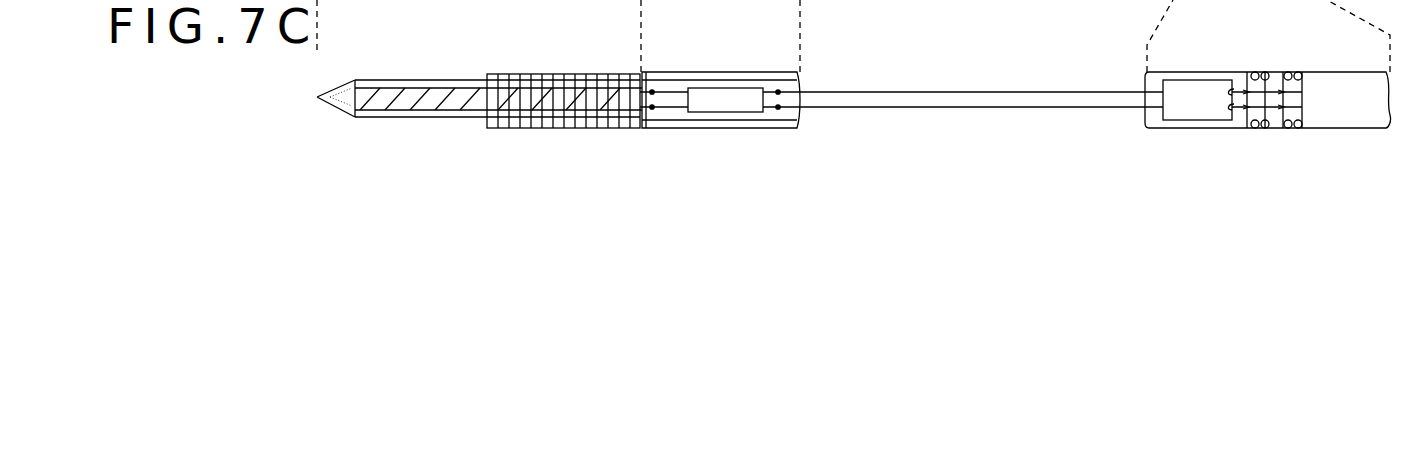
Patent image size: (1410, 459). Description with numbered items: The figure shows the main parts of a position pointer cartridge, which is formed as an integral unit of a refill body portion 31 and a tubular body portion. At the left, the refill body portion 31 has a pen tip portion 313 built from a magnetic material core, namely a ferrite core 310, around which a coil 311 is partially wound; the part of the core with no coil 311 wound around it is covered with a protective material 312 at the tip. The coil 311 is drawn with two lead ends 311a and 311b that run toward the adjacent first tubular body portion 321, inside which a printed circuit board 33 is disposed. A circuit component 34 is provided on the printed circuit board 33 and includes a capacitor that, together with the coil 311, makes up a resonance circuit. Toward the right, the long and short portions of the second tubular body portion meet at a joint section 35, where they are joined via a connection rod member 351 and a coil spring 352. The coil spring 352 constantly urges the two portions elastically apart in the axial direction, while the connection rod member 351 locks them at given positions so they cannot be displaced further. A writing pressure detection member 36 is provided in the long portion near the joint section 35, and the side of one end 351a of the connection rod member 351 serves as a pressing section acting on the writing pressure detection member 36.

The refill body portion 31 is at (511, 163).
The ferrite core 310 is at (498, 130).
The coil 311 is at (599, 131).
The first lead of mesh electrode 311a is at (645, 88).
The second lead of mesh electrode 311b is at (645, 128).
The protective material 312 is at (347, 107).
The pen tip portion 313 is at (477, 158).
The first tubular body portion 321 is at (742, 75).
The printed circuit board 33 is at (902, 102).
The circuit component 34 is at (735, 112).
The joint section 35 is at (1268, 111).
The connection rod member 351 is at (1270, 101).
The one end of connection rod member 351a is at (1228, 93).
The coil spring 352 is at (1275, 72).
The writing pressure detection member 36 is at (1195, 112).